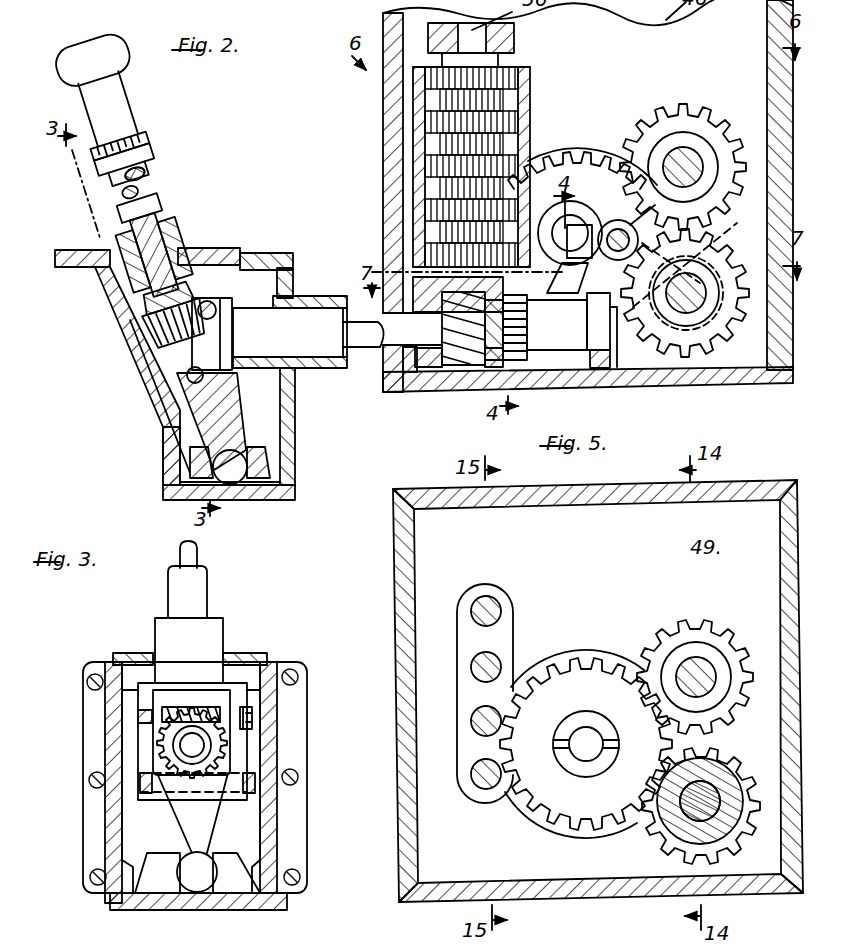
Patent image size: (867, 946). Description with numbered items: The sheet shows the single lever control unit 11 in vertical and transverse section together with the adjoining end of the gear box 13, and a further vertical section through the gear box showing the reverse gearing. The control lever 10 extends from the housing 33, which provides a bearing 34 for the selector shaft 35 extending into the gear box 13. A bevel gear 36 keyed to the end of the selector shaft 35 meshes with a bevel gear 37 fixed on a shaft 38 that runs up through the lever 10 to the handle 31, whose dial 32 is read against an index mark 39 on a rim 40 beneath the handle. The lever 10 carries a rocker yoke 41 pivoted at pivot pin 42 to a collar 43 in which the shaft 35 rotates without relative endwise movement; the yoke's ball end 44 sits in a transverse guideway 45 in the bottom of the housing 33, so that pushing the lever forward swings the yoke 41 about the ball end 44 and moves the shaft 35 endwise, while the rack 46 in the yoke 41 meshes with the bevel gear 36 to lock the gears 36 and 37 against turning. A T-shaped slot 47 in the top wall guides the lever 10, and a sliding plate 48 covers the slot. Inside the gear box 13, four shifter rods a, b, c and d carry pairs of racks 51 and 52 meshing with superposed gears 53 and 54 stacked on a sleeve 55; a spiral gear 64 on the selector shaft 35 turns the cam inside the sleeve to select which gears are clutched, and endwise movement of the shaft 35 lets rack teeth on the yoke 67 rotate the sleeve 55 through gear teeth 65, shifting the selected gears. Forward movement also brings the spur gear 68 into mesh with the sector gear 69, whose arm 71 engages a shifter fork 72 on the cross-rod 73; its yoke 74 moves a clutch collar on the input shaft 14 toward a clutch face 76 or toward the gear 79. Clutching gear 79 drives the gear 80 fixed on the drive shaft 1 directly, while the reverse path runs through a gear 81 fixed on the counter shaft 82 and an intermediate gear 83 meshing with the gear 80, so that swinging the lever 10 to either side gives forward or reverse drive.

In FIG. 2, the control lever 10 is at (150, 200).
In FIG. 3, the control lever 10 is at (200, 581).
In FIG. 2, the control unit 11 is at (262, 252).
In FIG. 3, the control unit 11 is at (294, 732).
In FIG. 5, the gear box 13 is at (393, 182).
In FIG. 5, the input shaft 14 is at (698, 307).
In FIG. 2, the handle 31 is at (122, 86).
In FIG. 2, the dial 32 is at (140, 139).
In FIG. 2, the housing 33 is at (150, 383).
In FIG. 3, the housing 33 is at (113, 826).
In FIG. 2, the bearing 34 is at (315, 370).
In FIG. 2, the selector shaft 35 is at (360, 340).
In FIG. 3, the selector shaft 35 is at (190, 742).
In FIG. 2, the bevel gear 36 is at (180, 337).
In FIG. 3, the bevel gear 36 is at (228, 750).
In FIG. 2, the bevel gear 37 is at (150, 322).
In FIG. 3, the bevel gear 37 is at (176, 707).
In FIG. 2, the shaft 38 is at (148, 248).
In FIG. 3, the shaft 38 is at (197, 553).
In FIG. 2, the index mark 39 is at (142, 148).
In FIG. 2, the rim 40 is at (150, 151).
In FIG. 2, the rocker yoke 41 is at (195, 408).
In FIG. 3, the rocker yoke 41 is at (222, 672).
In FIG. 2, the pivot pin 42 is at (215, 307).
In FIG. 3, the pivot pin 42 is at (254, 713).
In FIG. 2, the collar 43 is at (226, 346).
In FIG. 2, the ball end 44 is at (235, 484).
In FIG. 3, the ball end 44 is at (197, 892).
In FIG. 2, the transverse guideway 45 is at (250, 473).
In FIG. 3, the transverse guideway 45 is at (242, 886).
In FIG. 2, the rack 46 is at (204, 380).
In FIG. 3, the rack 46 is at (213, 762).
In FIG. 2, the T-shaped slot 47 is at (217, 248).
In FIG. 3, the T-shaped slot 47 is at (268, 658).
In FIG. 2, the plate 48 is at (60, 250).
In FIG. 3, the plate 48 is at (126, 653).
In FIG. 5, the rack 51 is at (417, 100).
In FIG. 5, the rack 52 is at (529, 64).
In FIG. 5, the gear 53 is at (524, 100).
In FIG. 5, the gear 54 is at (426, 69).
In FIG. 5, the sleeve 55 is at (486, 62).
In FIG. 5, the spiral gear 64 is at (456, 360).
In FIG. 5, the gear teeth 65 is at (530, 322).
In FIG. 5, the yoke 67 is at (418, 290).
In FIG. 5, the spur gear 68 is at (516, 358).
In FIG. 5, the sector gear 69 is at (596, 300).
In FIG. 5, the arm 71 is at (580, 280).
In FIG. 5, the shifter fork 72 is at (584, 230).
In FIG. 5, the cross-rod 73 is at (634, 225).
In FIG. 5, the yoke 74 is at (698, 260).
In FIG. 5, the clutch face 76 is at (734, 303).
In FIG. 5, the gear 79 is at (741, 846).
In FIG. 5, the gear 80 is at (546, 676).
In FIG. 5, the gear 81 is at (706, 134).
In FIG. 5, the counter shaft 82 is at (692, 166).
In FIG. 5, the intermediate gear 83 is at (692, 628).
In FIG. 5, the drive shaft 1 is at (584, 735).
In FIG. 5, the shifter rod a is at (471, 777).
In FIG. 5, the shifter rod b is at (471, 722).
In FIG. 5, the shifter rod c is at (471, 668).
In FIG. 5, the shifter rod d is at (471, 611).